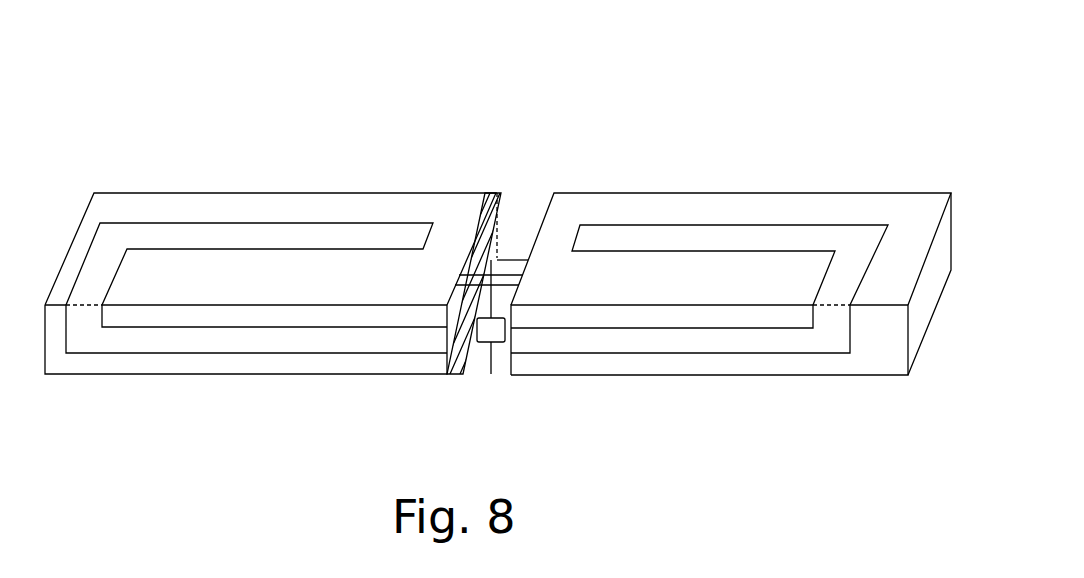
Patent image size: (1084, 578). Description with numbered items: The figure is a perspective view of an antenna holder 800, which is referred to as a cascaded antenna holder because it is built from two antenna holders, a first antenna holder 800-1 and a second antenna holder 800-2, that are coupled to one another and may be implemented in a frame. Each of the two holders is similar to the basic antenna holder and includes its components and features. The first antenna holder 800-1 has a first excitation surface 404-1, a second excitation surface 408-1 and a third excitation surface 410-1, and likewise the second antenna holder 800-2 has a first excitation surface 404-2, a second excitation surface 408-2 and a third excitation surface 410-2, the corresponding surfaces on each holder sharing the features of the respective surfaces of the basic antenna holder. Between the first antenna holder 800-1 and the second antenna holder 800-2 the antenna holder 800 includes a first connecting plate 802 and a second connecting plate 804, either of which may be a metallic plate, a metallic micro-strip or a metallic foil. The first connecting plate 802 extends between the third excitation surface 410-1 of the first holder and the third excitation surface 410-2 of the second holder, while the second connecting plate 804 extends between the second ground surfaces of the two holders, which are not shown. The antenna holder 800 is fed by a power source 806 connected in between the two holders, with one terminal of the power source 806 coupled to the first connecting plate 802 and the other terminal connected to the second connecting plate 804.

The antenna holder 800 is at (507, 68).
The first antenna holder 800-1 is at (226, 149).
The second antenna holder 800-2 is at (793, 132).
The first excitation surface 404-1 is at (104, 358).
The first excitation surface 404-2 is at (855, 358).
The third excitation surface 410-1 is at (291, 215).
The third excitation surface 410-2 is at (919, 228).
The second excitation surface 408-1 is at (497, 197).
The second excitation surface 408-2 is at (544, 204).
The first connecting plate 802 is at (497, 290).
The second connecting plate 804 is at (472, 353).
The power source 806 is at (497, 328).